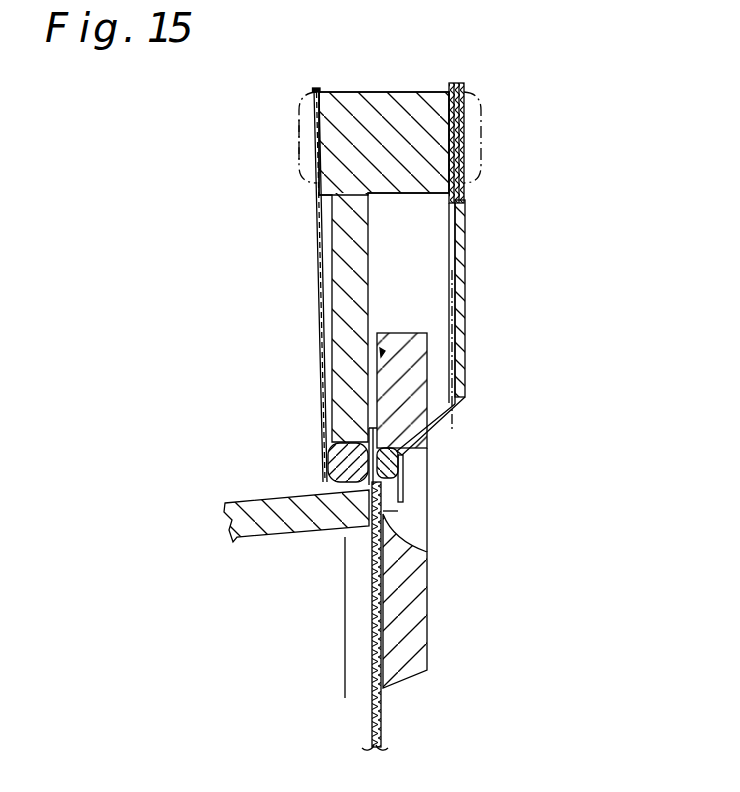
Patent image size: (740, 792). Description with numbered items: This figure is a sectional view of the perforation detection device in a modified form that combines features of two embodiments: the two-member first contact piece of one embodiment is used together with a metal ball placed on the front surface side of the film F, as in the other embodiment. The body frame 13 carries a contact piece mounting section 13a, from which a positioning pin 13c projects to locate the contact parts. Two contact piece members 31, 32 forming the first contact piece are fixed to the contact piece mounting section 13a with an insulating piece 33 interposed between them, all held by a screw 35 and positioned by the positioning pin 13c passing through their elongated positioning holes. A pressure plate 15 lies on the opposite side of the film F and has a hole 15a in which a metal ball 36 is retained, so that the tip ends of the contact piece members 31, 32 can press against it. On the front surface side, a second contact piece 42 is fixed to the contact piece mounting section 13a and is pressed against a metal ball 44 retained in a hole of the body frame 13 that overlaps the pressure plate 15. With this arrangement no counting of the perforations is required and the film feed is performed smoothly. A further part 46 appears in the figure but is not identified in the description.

The body frame 13 is at (333, 285).
The contact piece mounting section 13a is at (377, 120).
The positioning pin 13c is at (325, 432).
The pressure plate 15 is at (428, 627).
The hole of the pressure plate 15a is at (400, 418).
The contact piece member 31 is at (466, 291).
The contact piece member 32 is at (449, 255).
The insulating piece 33 is at (455, 83).
The screw 35 is at (481, 143).
The metal ball 36 is at (383, 506).
The second contact piece 42 is at (323, 345).
The metal ball 44 is at (337, 488).
The cover 46 is at (299, 165).
The film F is at (382, 717).